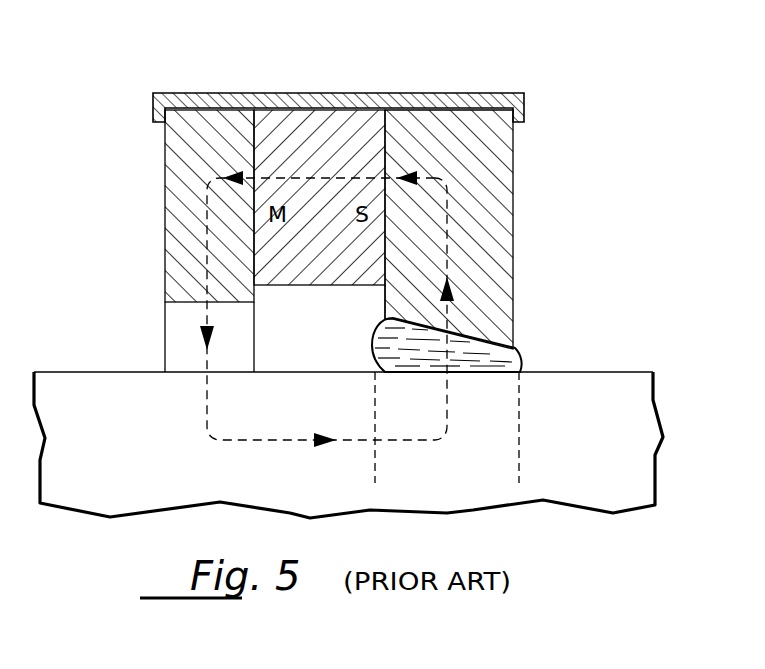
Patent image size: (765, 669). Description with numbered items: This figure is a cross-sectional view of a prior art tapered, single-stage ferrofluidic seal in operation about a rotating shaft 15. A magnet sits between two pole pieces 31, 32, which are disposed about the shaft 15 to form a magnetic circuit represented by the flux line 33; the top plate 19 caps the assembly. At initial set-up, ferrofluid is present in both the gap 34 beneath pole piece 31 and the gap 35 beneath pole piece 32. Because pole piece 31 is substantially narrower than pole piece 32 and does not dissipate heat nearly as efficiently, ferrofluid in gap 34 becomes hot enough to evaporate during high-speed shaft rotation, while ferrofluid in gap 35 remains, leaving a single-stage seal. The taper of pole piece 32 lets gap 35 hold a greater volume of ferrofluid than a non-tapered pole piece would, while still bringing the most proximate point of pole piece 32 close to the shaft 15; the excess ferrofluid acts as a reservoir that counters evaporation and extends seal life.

The shaft 15 is at (348, 445).
The top plate cap 19 is at (320, 140).
The pole piece 31 is at (177, 194).
The pole piece 32 is at (497, 190).
The flux line 33 is at (447, 242).
The gap 34 is at (178, 337).
The gap 35 is at (520, 355).